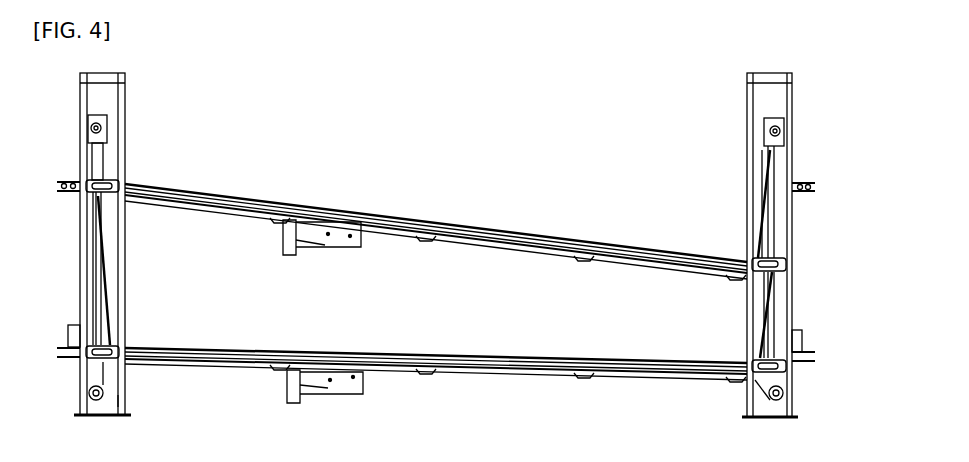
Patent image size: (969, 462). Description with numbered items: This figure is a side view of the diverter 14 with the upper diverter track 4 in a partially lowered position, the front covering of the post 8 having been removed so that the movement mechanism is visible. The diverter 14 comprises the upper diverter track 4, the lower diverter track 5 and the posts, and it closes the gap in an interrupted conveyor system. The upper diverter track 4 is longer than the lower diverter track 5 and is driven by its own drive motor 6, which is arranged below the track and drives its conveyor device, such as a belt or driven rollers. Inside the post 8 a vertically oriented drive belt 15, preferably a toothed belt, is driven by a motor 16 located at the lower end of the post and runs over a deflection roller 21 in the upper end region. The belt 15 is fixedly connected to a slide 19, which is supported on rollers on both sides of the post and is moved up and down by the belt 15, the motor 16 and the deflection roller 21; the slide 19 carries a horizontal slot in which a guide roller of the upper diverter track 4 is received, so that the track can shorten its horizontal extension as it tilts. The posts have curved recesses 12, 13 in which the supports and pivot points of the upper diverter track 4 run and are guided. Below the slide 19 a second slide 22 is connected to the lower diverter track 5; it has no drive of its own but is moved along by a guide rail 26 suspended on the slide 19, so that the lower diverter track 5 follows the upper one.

The upper diverter track 4 is at (518, 222).
The lower diverter track 5 is at (495, 356).
The drive motor 6 is at (300, 250).
The post 8 is at (125, 405).
The recess 12 is at (112, 322).
The arcuate recess 13 is at (748, 330).
The diverter 14 is at (458, 137).
The drive belt 15 is at (107, 155).
The motor 16 is at (760, 395).
The slide 19 is at (125, 170).
The deflection roller 21 is at (752, 135).
The second slide 22 is at (125, 340).
The guide rail 26 is at (762, 222).